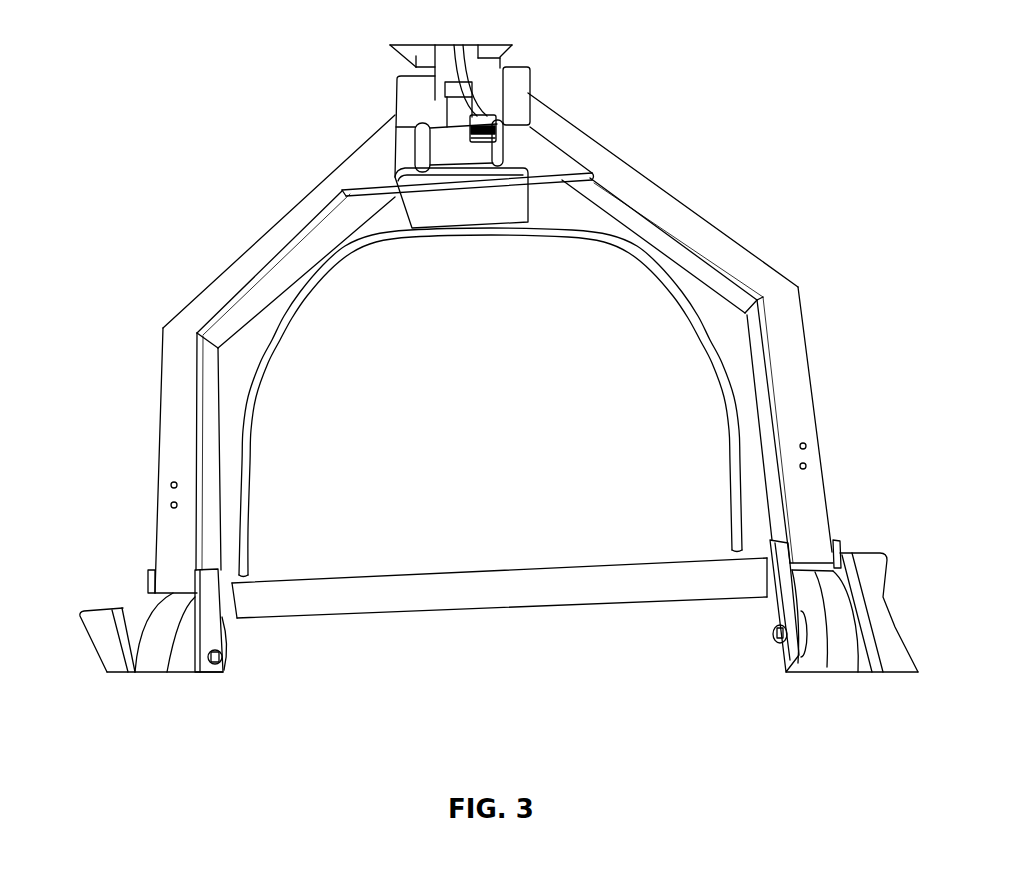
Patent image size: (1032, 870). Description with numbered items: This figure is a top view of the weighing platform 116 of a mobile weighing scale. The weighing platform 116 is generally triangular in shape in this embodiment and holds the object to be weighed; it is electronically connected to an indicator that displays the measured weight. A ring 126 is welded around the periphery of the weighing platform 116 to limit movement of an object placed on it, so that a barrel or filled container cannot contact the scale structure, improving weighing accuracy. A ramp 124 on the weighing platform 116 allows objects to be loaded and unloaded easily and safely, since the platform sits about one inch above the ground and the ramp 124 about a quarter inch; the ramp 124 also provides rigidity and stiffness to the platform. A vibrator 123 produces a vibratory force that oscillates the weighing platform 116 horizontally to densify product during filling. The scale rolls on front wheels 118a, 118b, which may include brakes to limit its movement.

The weighing platform 116 is at (490, 410).
The front wheel 118a is at (153, 628).
The front wheel 118b is at (852, 658).
The vibrator 123 is at (478, 147).
The ramp 124 is at (473, 597).
The ring 126 is at (177, 428).